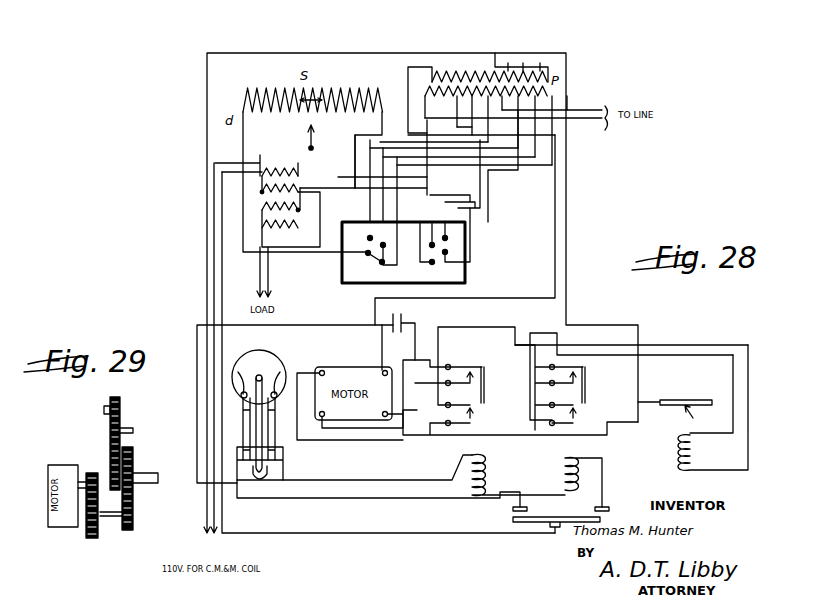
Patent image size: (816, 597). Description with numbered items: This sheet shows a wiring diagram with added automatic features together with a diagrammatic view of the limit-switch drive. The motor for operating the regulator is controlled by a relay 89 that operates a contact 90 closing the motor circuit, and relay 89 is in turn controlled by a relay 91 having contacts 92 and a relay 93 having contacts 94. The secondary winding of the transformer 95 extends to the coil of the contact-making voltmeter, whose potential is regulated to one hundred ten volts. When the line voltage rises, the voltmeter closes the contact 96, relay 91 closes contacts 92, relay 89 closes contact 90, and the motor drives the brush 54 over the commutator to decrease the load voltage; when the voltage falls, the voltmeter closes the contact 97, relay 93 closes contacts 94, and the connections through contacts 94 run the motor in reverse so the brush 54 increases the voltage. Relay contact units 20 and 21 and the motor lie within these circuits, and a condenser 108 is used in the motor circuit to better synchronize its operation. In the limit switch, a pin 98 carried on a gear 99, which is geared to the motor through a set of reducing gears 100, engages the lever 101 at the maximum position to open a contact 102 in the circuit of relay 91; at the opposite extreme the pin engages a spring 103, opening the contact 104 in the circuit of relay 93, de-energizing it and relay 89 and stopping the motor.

In FIG. 28, the relay contact unit 20 is at (372, 262).
In FIG. 28, the relay contact unit 21 is at (448, 250).
In FIG. 28, the brush 54 is at (308, 133).
In FIG. 28, the relay 89 is at (695, 456).
In FIG. 28, the contact 90 is at (683, 402).
In FIG. 28, the relay 91 is at (564, 471).
In FIG. 28, the contacts 92 is at (586, 396).
In FIG. 28, the relay 93 is at (488, 471).
In FIG. 28, the contacts 94 is at (484, 388).
In FIG. 28, the transformer 95 is at (302, 184).
In FIG. 28, the contact 96 is at (606, 514).
In FIG. 28, the contact 97 is at (531, 513).
In FIG. 28, the pin 98 is at (236, 380).
In FIG. 29, the pin 98 is at (104, 414).
In FIG. 28, the gear 99 is at (274, 368).
In FIG. 29, the gear 99 is at (118, 425).
In FIG. 29, the reducing gears 100 is at (108, 528).
In FIG. 28, the lever 101 is at (243, 440).
In FIG. 28, the contact 102 is at (244, 410).
In FIG. 28, the spring 103 is at (274, 372).
In FIG. 28, the contact 104 is at (278, 432).
In FIG. 28, the condenser 108 is at (403, 318).